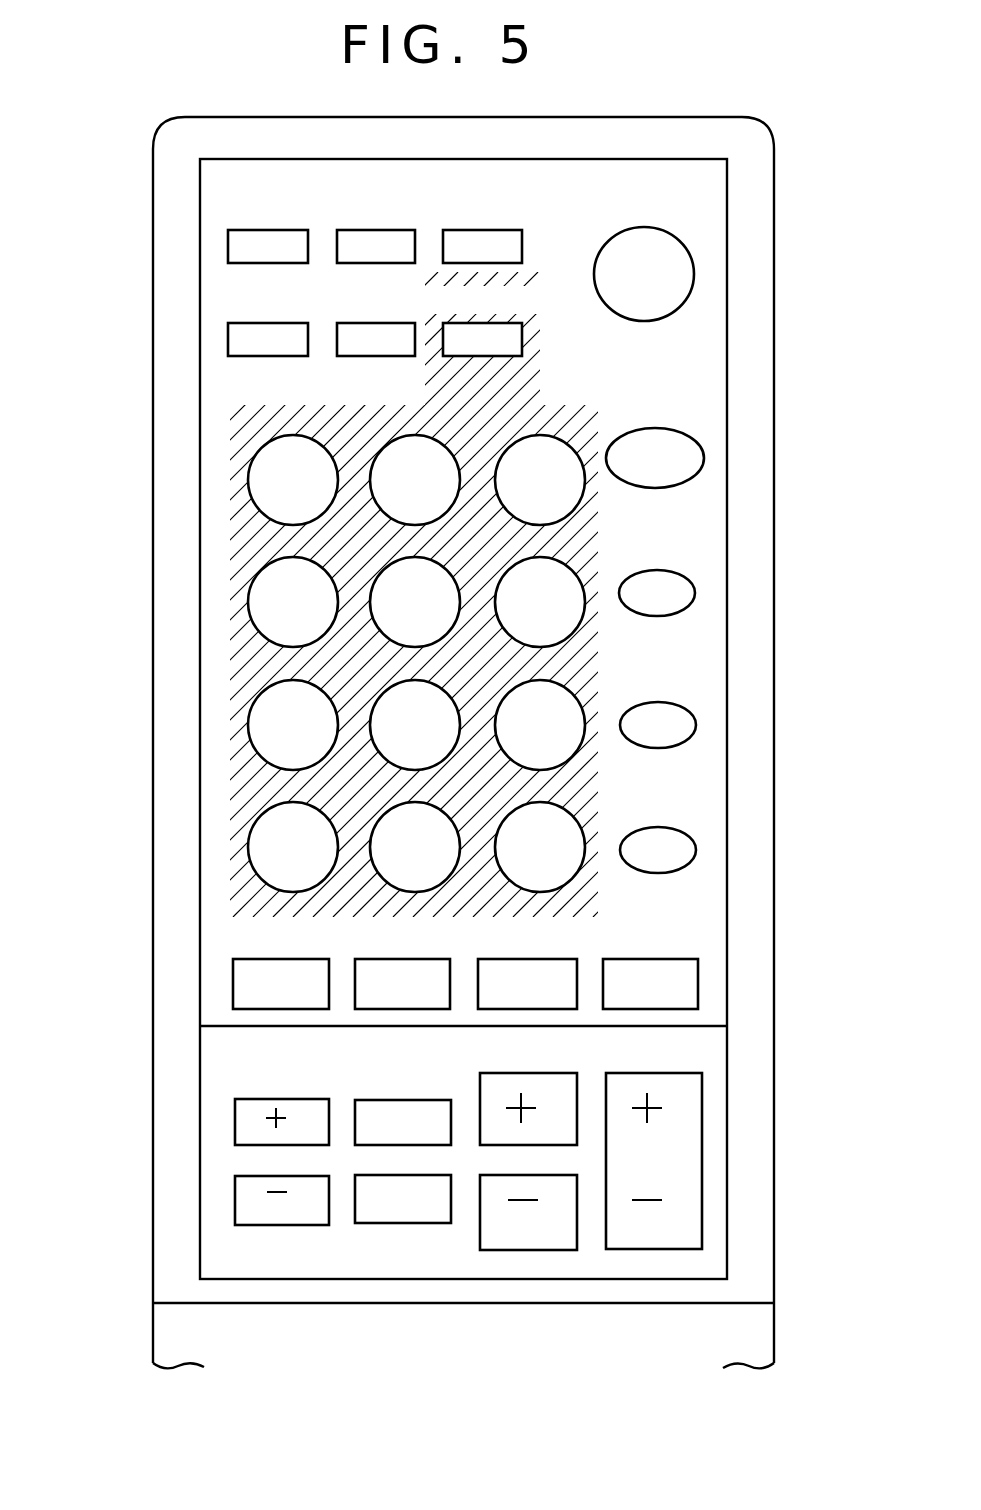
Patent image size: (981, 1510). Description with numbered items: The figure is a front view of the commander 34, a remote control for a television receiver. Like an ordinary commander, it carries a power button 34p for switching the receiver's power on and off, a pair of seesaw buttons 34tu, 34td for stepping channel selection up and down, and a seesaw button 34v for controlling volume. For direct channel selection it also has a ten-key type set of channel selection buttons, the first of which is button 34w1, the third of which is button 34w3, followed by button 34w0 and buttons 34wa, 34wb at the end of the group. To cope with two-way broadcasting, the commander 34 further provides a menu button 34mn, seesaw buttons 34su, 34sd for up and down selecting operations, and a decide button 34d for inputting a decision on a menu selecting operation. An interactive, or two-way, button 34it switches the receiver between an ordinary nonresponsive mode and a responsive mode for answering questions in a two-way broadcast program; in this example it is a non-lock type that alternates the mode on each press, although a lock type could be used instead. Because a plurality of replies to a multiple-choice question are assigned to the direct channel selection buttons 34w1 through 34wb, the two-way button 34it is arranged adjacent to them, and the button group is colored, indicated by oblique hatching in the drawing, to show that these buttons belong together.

The commander 34 is at (114, 173).
The interactive button 34it is at (522, 337).
The power button 34p is at (661, 306).
The direct channel selection button 34w1 is at (250, 487).
The direct channel selection button 34w3 is at (572, 497).
The direct channel selection button 34w0 is at (253, 845).
The direct channel selection button 34wa is at (421, 881).
The direct channel selection button 34wb is at (553, 881).
The seesaw button 34su is at (235, 1120).
The seesaw button 34sd is at (268, 1226).
The menu button 34mn is at (355, 1140).
The decide button 34d is at (405, 1224).
The seesaw button 34tu is at (480, 1100).
The seesaw button 34td is at (527, 1250).
The seesaw button 34v is at (653, 1250).